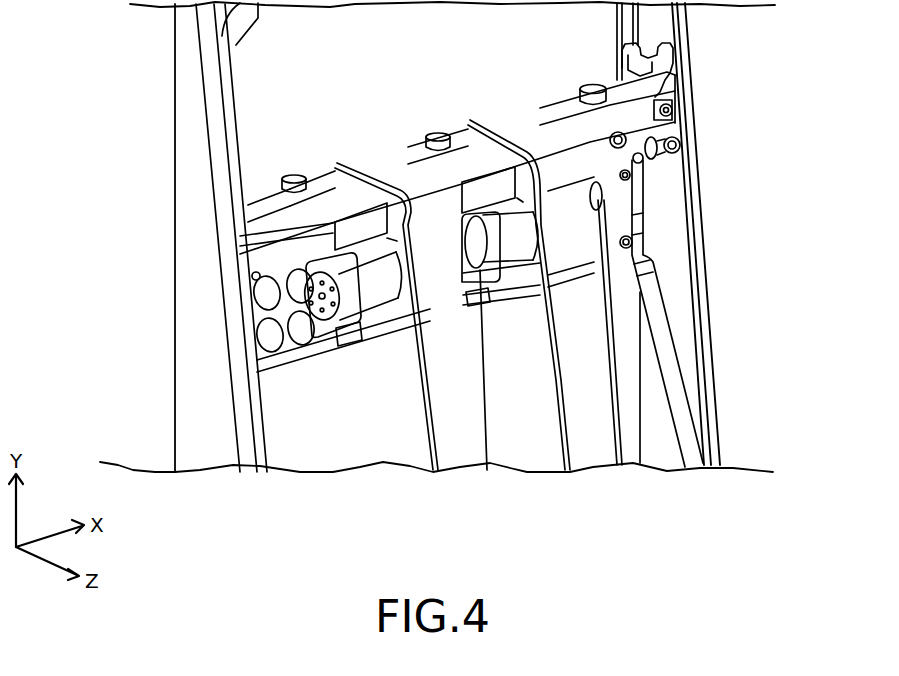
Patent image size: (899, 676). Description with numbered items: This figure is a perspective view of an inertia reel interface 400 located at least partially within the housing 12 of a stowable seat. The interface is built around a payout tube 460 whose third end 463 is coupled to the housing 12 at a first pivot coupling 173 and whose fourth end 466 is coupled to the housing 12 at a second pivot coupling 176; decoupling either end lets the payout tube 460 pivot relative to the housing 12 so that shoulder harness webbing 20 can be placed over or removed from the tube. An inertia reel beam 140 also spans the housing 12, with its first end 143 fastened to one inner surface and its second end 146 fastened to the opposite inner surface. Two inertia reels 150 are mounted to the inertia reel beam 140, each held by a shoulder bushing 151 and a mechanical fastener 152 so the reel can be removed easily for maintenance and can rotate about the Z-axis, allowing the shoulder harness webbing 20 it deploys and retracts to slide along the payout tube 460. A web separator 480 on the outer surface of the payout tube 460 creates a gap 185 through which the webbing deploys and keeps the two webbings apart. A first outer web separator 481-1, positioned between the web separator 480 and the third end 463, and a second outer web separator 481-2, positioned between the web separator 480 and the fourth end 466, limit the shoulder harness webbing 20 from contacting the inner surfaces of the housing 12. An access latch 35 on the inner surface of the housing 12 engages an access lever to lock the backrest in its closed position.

The inertia reel interface 400 is at (136, 131).
The housing 12 is at (200, 370).
The first pivot coupling 173 is at (250, 228).
The third end 463 is at (248, 210).
The payout tube 460 is at (553, 110).
The gap 185 is at (477, 117).
The first outer web separator 481-1 is at (294, 175).
The second outer web separator 481-2 is at (593, 85).
The web separator 480 is at (436, 131).
The shoulder harness webbing 20 is at (437, 462).
The first end 143 is at (258, 318).
The inertia reel beam 140 is at (282, 362).
The access latch 35 is at (254, 276).
The inertia reel 150 is at (318, 282).
The shoulder bushing 151 is at (343, 332).
The mechanical fastener 152 is at (350, 336).
The fourth end 466 is at (651, 85).
The second pivot coupling 176 is at (670, 110).
The second end 146 is at (622, 210).